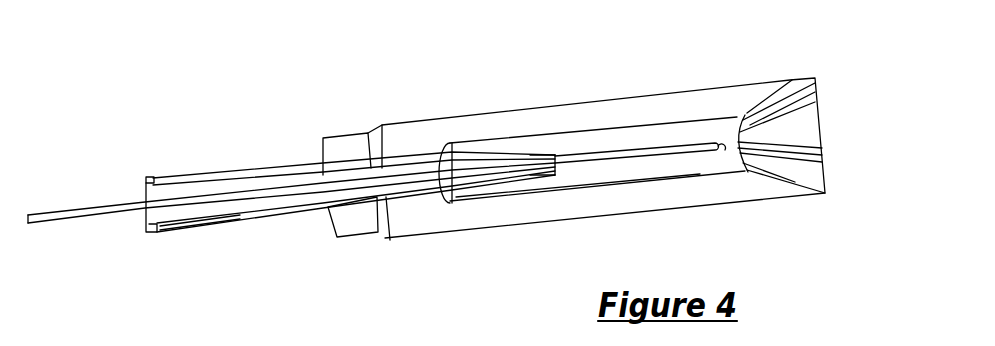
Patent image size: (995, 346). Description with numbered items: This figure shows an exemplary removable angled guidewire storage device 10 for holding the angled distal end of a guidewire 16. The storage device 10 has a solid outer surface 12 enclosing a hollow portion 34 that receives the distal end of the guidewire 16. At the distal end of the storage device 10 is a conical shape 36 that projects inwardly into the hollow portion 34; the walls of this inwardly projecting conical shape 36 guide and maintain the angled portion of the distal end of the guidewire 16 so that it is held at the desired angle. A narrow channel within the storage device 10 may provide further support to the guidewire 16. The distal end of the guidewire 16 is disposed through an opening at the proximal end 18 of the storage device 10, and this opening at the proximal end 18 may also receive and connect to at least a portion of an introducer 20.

The removable angled guidewire storage device 10 is at (698, 72).
The solid outer surface 12 is at (548, 108).
The guidewire 16 is at (630, 157).
The proximal end 18 is at (327, 208).
The introducer 20 is at (207, 213).
The hollow portion 34 is at (548, 182).
The conical shape 36 is at (805, 131).